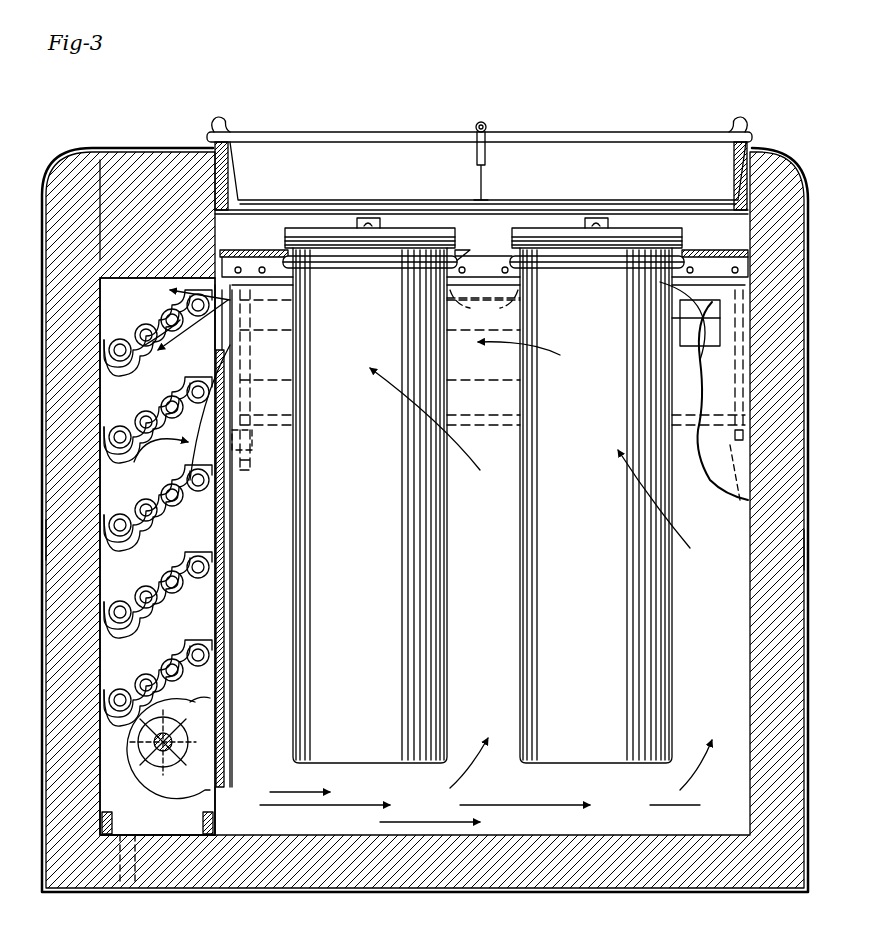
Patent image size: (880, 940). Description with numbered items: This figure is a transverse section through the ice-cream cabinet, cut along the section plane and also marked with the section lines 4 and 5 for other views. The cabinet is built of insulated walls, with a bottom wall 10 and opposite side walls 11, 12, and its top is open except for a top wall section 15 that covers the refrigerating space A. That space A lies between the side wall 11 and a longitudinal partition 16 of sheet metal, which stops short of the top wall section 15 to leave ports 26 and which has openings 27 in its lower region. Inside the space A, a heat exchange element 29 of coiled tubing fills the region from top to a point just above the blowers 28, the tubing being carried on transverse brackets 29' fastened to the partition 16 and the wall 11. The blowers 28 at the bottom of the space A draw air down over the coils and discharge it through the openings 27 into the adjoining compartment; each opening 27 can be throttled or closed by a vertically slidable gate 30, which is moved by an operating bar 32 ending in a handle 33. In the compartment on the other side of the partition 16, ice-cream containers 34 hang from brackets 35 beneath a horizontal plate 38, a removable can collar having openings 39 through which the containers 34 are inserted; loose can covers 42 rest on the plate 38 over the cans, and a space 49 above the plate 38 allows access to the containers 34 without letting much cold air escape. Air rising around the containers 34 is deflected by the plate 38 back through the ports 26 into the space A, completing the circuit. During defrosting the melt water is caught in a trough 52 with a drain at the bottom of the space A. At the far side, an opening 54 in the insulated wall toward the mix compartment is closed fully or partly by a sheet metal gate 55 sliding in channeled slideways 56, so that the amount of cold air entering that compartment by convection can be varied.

The bottom wall 10 is at (437, 870).
The side wall 11 is at (60, 536).
The side wall 12 is at (803, 540).
The top wall section 15 is at (150, 185).
The longitudinal partition 16 is at (223, 500).
The ports 26 is at (225, 335).
The openings 27 is at (222, 808).
The blowers 28 is at (192, 799).
The heat exchange element 29 is at (158, 506).
The brackets 29' is at (155, 481).
The gates 30 is at (226, 760).
The operating bar 32 is at (233, 535).
The handle 33 is at (252, 240).
The ice-cream containers 34 is at (372, 517).
The brackets 35 is at (462, 308).
The horizontal plate 38 is at (232, 256).
The openings 39 is at (460, 258).
The can cover 42 is at (370, 232).
The space 49 is at (480, 196).
The trough 52 is at (108, 830).
The opening 54 is at (702, 304).
The sheet metal gate 55 is at (692, 357).
The channeled slideways 56 is at (730, 495).
The section line 4- 4 is at (30, 715).
The section line 5- 5 is at (30, 316).
The refrigerating space A is at (123, 405).